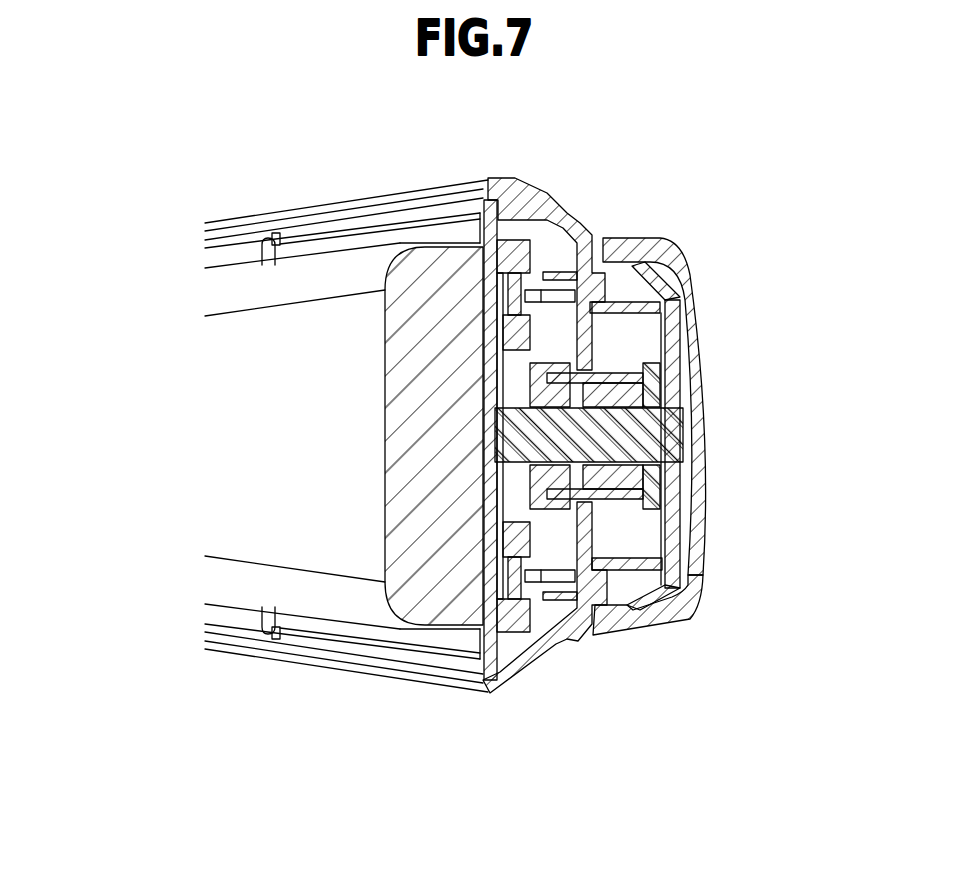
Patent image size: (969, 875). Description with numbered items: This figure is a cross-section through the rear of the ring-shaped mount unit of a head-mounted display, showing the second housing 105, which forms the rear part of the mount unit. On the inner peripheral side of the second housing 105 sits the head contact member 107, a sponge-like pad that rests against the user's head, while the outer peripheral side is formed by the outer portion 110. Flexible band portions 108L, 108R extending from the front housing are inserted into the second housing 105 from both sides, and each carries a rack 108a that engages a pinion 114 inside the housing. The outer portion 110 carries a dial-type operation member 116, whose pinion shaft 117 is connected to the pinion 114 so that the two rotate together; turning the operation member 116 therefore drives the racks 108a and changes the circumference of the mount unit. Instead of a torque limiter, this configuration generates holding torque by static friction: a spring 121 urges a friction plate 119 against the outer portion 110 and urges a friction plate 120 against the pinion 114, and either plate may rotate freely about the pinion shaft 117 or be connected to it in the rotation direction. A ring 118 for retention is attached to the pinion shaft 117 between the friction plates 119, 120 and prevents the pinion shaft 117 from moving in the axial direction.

The second housing 105 is at (312, 670).
The head contact member 107 is at (392, 455).
The rack 108a is at (490, 288).
The band portion 108L is at (508, 273).
The band portion 108R is at (513, 627).
The outer portion 110 is at (550, 197).
The pinion 114 is at (493, 387).
The operation member 116 is at (690, 620).
The pinion shaft 117 is at (657, 430).
The ring 118 is at (580, 473).
The friction plate 119 is at (643, 391).
The friction plate 120 is at (615, 363).
The spring 121 is at (696, 272).